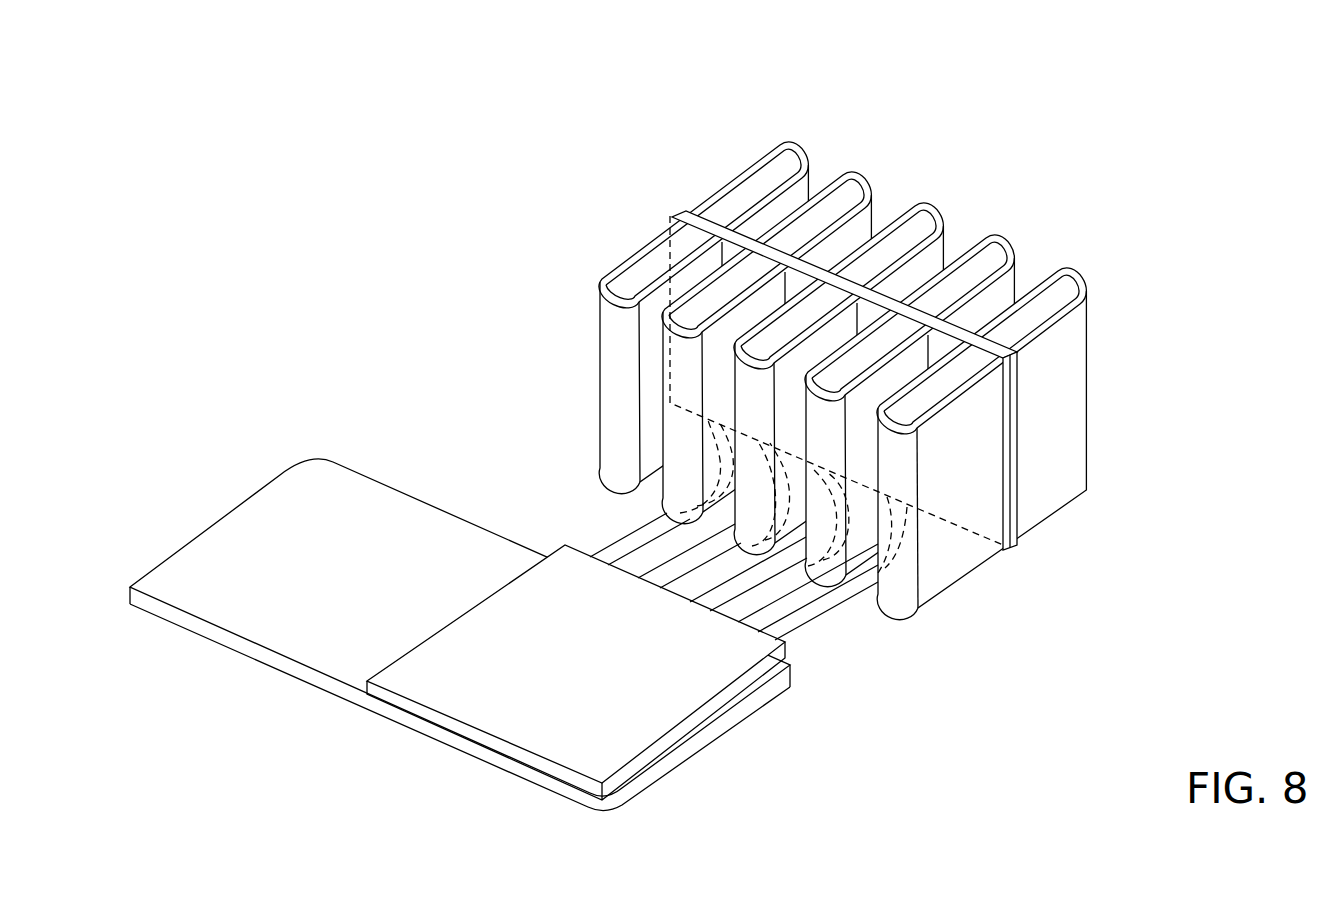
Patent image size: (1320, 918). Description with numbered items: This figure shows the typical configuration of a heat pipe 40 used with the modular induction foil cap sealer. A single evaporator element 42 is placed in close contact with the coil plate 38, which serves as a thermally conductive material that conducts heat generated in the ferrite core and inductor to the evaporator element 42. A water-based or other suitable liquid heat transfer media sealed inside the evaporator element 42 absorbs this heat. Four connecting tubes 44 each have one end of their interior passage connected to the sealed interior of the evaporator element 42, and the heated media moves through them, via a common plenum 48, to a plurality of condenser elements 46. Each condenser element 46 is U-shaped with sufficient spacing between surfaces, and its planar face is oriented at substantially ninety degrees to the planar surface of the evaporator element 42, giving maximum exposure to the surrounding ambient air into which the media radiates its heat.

The coil plate 38 is at (240, 553).
The heat pipe 40 is at (924, 330).
The evaporator element 42 is at (615, 672).
The connecting tube 44 is at (793, 603).
The condenser element 46 is at (1067, 345).
The common plenum 48 is at (1013, 525).